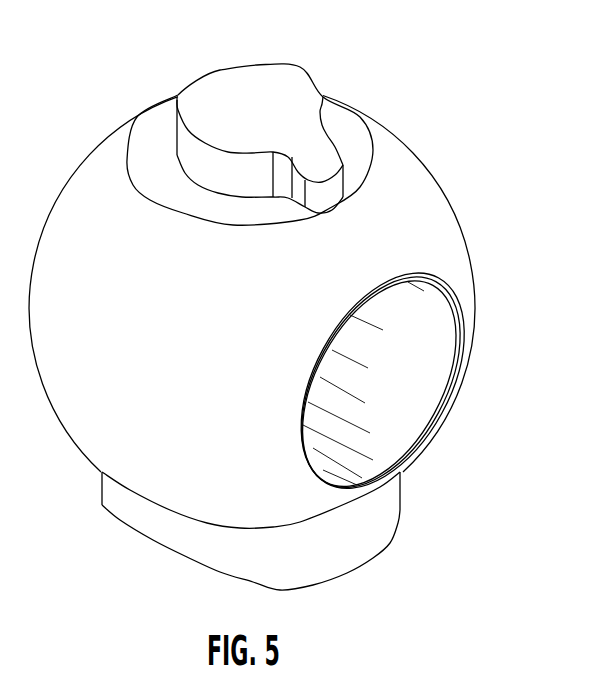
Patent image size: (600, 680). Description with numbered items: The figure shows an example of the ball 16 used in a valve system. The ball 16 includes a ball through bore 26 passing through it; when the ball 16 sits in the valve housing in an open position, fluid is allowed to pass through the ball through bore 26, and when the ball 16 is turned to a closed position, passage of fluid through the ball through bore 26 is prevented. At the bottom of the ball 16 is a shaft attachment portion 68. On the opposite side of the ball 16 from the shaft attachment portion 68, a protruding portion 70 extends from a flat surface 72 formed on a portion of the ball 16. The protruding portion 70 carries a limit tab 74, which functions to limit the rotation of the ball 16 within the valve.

The ball 16 is at (499, 50).
The ball through bore 26 is at (400, 383).
The shaft attachment portion 68 is at (380, 508).
The protruding portion 70 is at (220, 98).
The flat surface 72 is at (148, 147).
The limit tab 74 is at (328, 155).